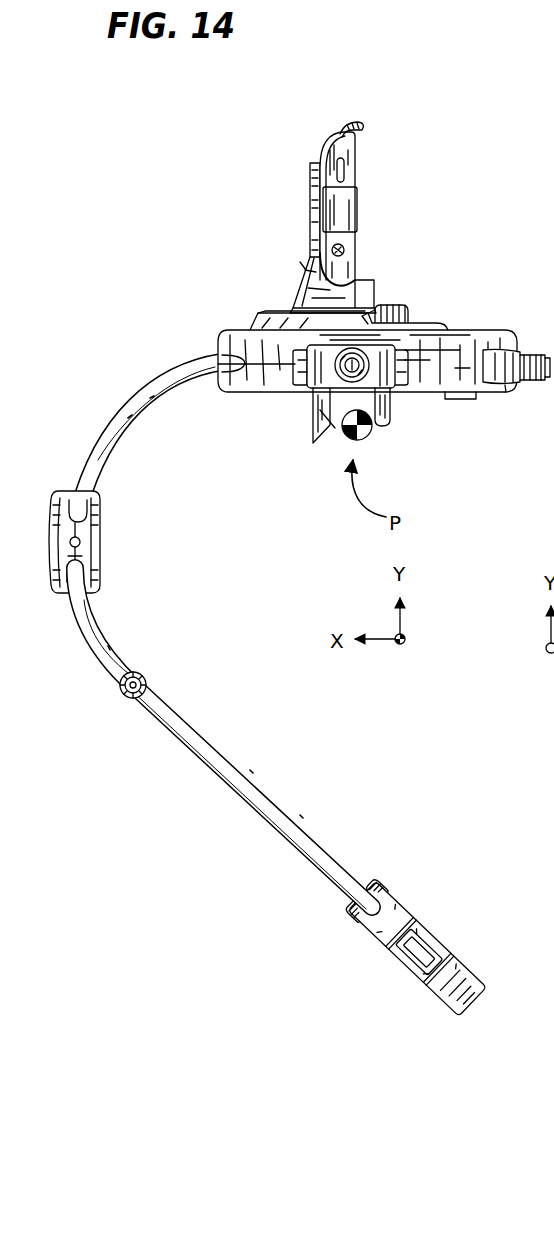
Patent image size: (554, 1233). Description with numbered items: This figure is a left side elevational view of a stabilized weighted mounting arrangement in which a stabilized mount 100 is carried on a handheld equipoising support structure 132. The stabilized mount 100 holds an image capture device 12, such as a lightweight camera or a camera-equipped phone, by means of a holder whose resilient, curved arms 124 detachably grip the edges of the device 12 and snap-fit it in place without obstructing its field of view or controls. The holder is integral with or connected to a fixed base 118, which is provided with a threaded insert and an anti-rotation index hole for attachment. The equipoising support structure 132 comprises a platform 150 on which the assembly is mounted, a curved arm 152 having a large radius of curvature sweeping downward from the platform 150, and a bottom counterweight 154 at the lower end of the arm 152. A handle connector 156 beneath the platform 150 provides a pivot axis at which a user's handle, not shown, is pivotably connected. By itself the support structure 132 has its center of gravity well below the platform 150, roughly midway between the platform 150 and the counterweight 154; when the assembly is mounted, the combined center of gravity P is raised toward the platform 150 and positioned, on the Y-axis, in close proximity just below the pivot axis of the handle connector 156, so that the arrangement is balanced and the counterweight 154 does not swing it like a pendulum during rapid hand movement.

The image capture device 12 is at (357, 150).
The stabilized mount 100 is at (309, 175).
The fixed base 118 is at (372, 286).
The arms 124 is at (337, 134).
The handheld equipoising support structure 132 is at (312, 828).
The platform 150 is at (496, 332).
The curved arm 152 is at (132, 380).
The bottom counterweight 154 is at (405, 910).
The handle connector 156 is at (335, 412).